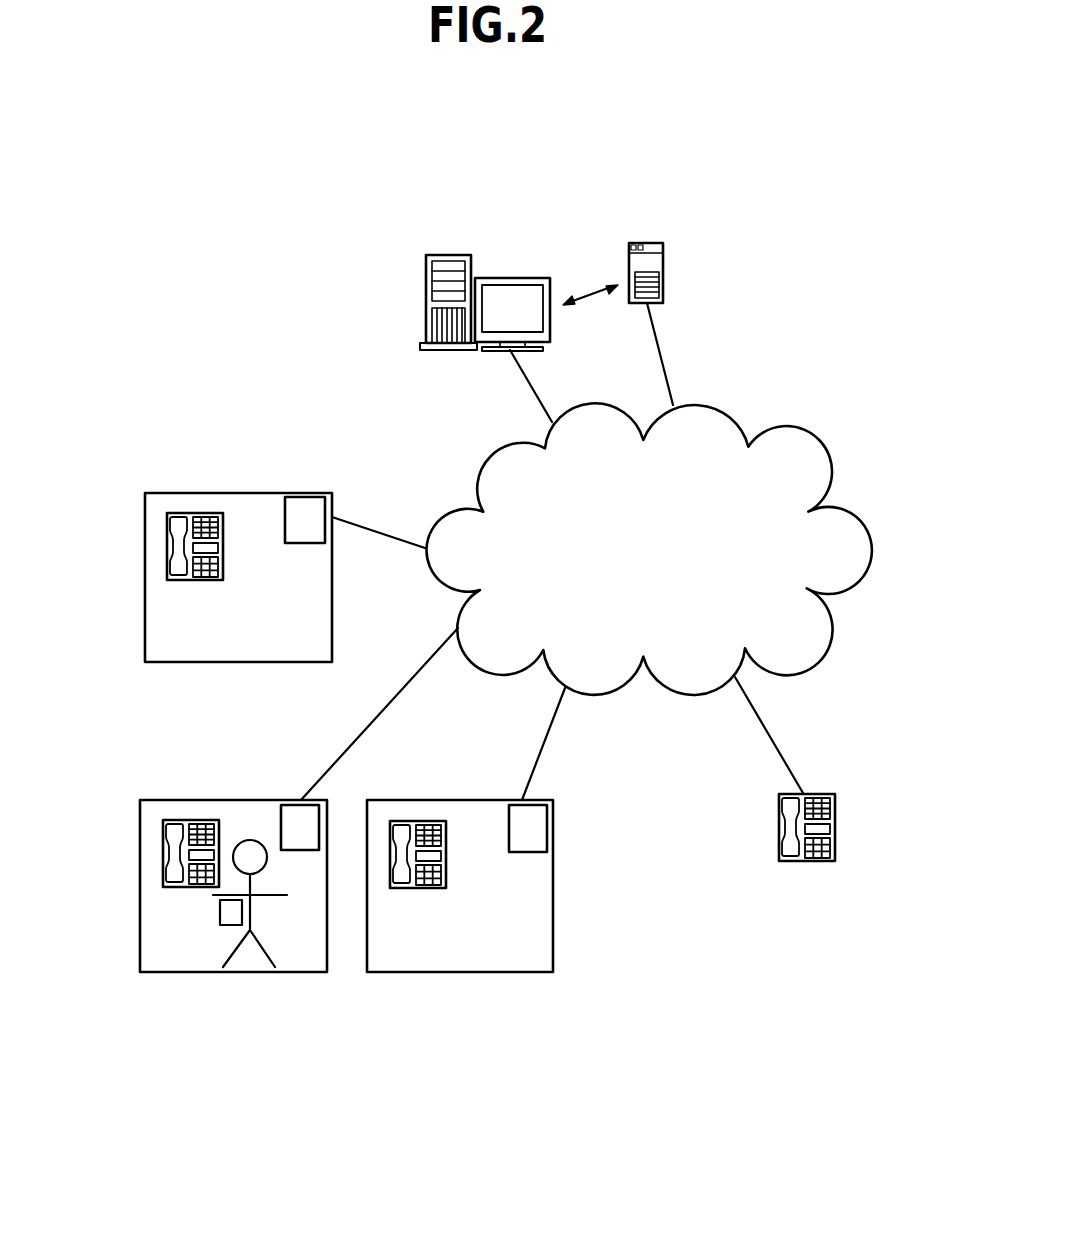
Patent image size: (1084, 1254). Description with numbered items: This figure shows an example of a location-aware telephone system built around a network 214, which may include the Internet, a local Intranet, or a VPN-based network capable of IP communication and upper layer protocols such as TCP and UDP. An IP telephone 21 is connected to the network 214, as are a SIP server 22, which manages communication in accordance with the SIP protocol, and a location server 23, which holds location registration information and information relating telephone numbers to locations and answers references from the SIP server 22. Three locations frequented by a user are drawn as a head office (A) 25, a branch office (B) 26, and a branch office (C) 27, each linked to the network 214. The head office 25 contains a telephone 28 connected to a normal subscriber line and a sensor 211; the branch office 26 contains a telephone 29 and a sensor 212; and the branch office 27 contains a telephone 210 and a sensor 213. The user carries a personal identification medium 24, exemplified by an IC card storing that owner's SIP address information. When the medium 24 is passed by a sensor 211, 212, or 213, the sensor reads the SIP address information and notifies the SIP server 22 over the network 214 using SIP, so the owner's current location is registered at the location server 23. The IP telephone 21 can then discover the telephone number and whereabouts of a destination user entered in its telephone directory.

The IP telephone 21 is at (805, 863).
The SIP server 22 is at (447, 255).
The location server 23 is at (652, 243).
The personal identification medium 24 is at (230, 925).
The head office (A) 25 is at (238, 493).
The branch office (B) 26 is at (167, 800).
The branch office (C) 27 is at (465, 800).
The telephone 28 is at (190, 583).
The telephone 29 is at (187, 888).
The telephone 210 is at (412, 892).
The sensor 211 is at (303, 543).
The sensor 212 is at (292, 805).
The sensor 213 is at (527, 852).
The network 214 is at (797, 440).